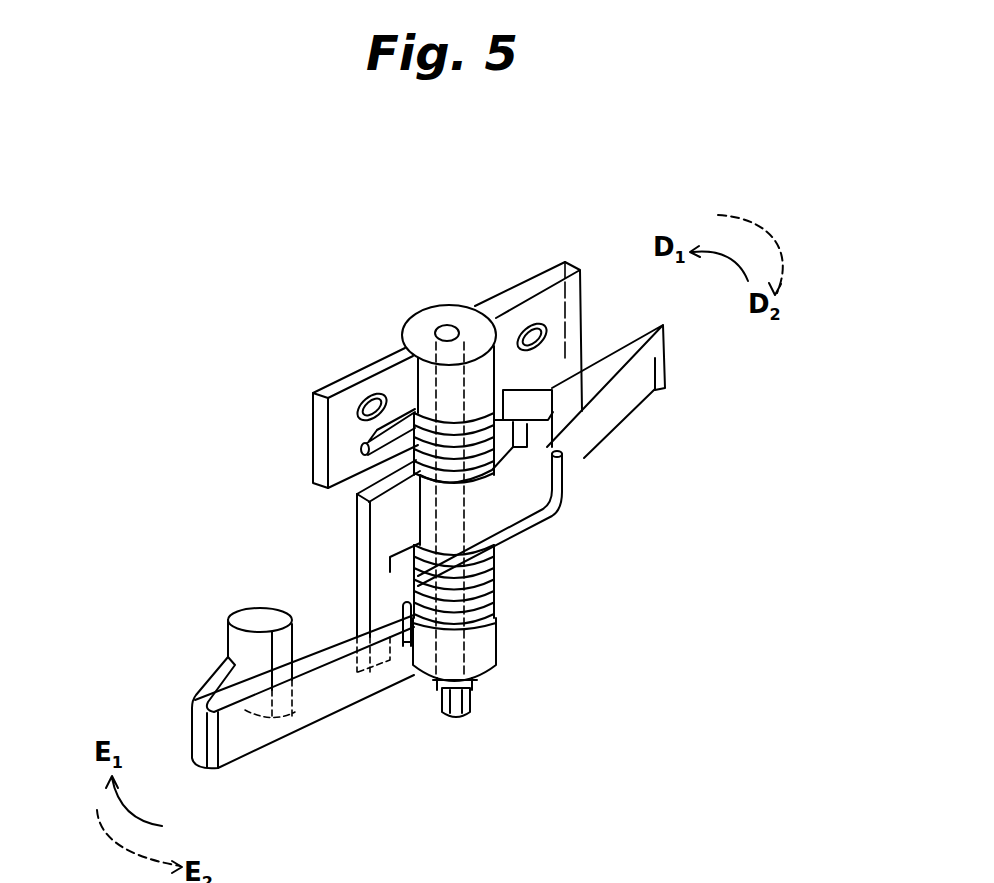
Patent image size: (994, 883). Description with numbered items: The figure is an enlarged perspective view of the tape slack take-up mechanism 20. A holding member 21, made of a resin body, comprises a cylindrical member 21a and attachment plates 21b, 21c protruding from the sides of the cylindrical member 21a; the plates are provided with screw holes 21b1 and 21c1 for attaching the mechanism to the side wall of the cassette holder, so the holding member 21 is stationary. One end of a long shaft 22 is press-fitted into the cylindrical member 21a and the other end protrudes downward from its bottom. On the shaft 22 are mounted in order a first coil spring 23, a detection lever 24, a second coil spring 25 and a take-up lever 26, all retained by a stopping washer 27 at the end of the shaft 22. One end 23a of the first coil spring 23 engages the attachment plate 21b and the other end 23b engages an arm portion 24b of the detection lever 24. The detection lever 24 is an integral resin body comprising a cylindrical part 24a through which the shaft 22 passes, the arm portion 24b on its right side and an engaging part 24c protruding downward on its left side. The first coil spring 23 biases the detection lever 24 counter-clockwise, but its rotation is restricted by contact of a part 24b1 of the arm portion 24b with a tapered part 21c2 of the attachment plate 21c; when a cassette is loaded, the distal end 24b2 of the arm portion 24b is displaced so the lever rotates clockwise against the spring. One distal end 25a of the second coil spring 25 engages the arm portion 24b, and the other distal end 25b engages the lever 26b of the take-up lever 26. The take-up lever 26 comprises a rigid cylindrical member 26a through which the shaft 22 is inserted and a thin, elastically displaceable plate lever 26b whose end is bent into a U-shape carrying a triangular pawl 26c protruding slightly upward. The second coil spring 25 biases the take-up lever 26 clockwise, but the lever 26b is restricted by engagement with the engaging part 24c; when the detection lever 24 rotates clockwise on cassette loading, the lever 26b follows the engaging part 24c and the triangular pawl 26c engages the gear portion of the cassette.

The tape slack take-up mechanism 20 is at (256, 244).
The holding member 21 is at (441, 335).
The cylindrical member 21a is at (413, 320).
The attachment plate 21b is at (321, 400).
The screw hole 21b1 is at (367, 369).
The attachment plate 21c is at (566, 315).
The screw hole 21c1 is at (541, 328).
The tapered part 21c2 is at (533, 392).
The shaft 22 is at (446, 332).
The first coil spring 23 is at (432, 512).
The one end of the first coil spring 23a is at (361, 450).
The other end of the first coil spring 23b is at (537, 530).
The detection lever 24 is at (514, 498).
The cylindrical part 24a is at (478, 505).
The arm portion 24b is at (660, 431).
The part of the arm portion 24b1 is at (550, 400).
The distal end of the arm 24b2 is at (666, 350).
The engaging part 24c is at (392, 518).
The second coil spring 25 is at (511, 596).
The distal end of the second coil spring 25a is at (558, 497).
The other distal end of the second coil spring 25b is at (407, 646).
The take-up lever 26 is at (376, 690).
The cylindrical member 26a is at (478, 660).
The lever 26b is at (309, 706).
The triangular pawl 26c is at (262, 617).
The stopping washer 27 is at (477, 683).